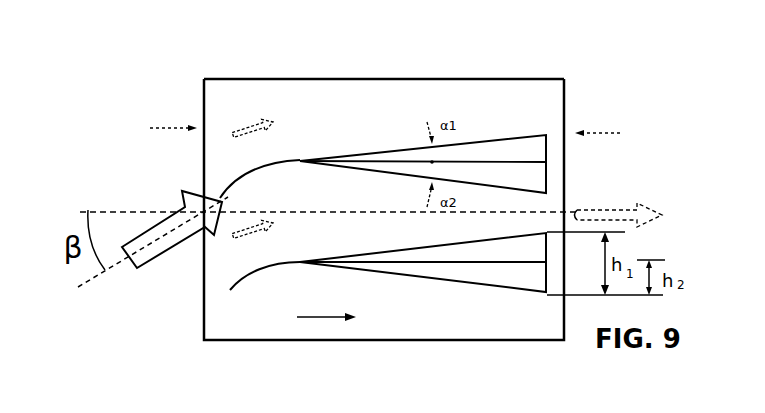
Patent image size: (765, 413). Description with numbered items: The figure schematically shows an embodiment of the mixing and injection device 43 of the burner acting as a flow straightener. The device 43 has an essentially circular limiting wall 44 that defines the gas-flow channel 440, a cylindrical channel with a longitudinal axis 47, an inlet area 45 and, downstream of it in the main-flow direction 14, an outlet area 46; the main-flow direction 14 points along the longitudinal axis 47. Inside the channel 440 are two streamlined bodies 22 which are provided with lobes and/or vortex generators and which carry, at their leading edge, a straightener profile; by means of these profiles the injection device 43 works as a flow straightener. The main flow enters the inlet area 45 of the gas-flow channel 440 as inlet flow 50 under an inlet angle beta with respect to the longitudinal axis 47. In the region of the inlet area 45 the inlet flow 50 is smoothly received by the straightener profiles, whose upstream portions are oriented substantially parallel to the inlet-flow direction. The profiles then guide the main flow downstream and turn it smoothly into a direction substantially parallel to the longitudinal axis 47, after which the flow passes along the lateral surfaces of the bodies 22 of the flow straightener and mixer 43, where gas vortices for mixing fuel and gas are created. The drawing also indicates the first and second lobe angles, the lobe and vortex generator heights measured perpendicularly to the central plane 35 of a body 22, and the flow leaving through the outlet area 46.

The main-flow direction 14 is at (317, 317).
The streamlined body 22 is at (505, 150).
The central plane 35 is at (523, 162).
The mixing and injection device 43 is at (186, 75).
The limiting wall 44 is at (331, 78).
The inlet area 45 is at (156, 128).
The outlet area 46 is at (615, 134).
The longitudinal axis 47 is at (619, 205).
The inlet flow 50 is at (184, 207).
The gas-flow channel 440 is at (437, 322).